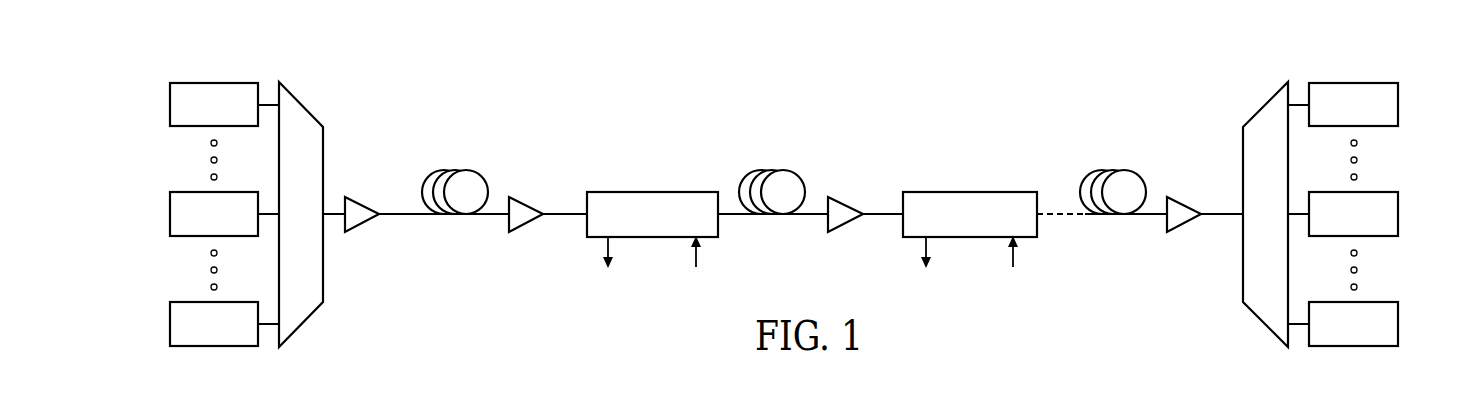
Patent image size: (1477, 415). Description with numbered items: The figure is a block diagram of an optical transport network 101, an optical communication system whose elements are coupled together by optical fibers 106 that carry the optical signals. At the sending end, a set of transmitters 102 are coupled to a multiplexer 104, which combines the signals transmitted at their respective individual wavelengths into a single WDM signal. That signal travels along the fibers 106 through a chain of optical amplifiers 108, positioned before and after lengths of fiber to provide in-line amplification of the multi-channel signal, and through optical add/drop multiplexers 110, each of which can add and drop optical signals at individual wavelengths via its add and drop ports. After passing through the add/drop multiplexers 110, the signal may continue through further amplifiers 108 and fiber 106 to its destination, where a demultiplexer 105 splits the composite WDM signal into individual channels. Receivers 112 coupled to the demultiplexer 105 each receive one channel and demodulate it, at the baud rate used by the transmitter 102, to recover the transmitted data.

The optical transport network 101 is at (551, 66).
The transmitter 102 is at (170, 91).
The multiplexer 104 is at (309, 108).
The demultiplexer 105 is at (1266, 109).
The optical fiber 106 is at (457, 170).
The optical amplifier 108 is at (363, 207).
The optical add/drop multiplexer 110 is at (652, 192).
The receiver 112 is at (1398, 91).